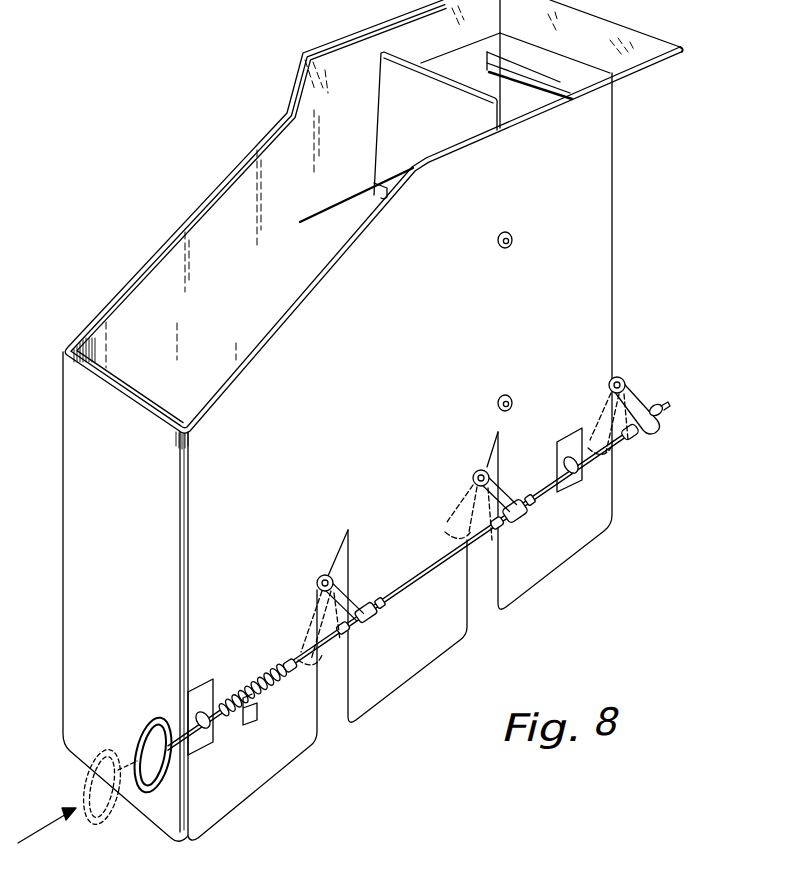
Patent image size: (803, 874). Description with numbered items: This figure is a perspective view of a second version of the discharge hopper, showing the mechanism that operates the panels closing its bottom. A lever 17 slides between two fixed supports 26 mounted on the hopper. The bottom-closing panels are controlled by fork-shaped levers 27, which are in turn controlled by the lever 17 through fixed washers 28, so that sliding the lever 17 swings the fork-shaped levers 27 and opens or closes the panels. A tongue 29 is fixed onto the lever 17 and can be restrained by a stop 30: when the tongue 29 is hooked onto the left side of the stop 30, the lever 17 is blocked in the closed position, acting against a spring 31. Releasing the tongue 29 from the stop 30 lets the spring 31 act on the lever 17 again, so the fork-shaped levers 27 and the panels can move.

The lever 17 is at (676, 418).
The fixed supports 26 is at (200, 690).
The fork-shaped levers 27 is at (655, 371).
The fixed washers 28 is at (584, 572).
The tongue 29 is at (338, 745).
The stop 30 is at (258, 748).
The spring 31 is at (268, 668).